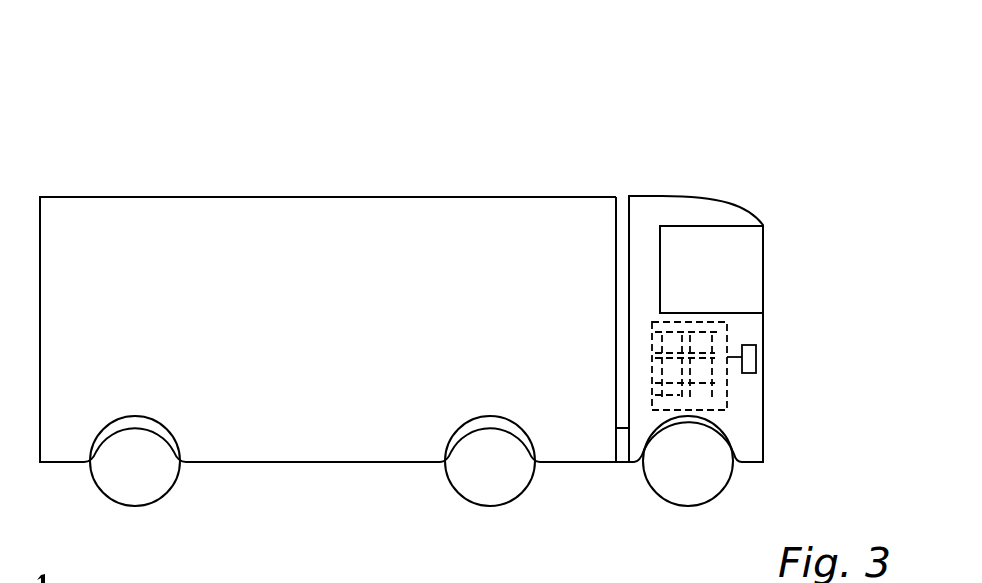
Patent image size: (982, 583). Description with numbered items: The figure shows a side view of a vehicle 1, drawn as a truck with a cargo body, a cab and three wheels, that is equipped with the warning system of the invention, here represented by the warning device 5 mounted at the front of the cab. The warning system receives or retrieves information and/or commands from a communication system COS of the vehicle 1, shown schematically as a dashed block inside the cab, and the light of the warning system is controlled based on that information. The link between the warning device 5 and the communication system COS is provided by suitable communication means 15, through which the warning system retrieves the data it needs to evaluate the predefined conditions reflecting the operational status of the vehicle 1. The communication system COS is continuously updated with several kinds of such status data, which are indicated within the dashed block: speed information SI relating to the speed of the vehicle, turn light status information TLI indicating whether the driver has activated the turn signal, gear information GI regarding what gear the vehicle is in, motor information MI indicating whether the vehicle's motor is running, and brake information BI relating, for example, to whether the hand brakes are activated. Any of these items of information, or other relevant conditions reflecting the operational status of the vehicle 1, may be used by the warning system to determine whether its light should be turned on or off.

The vehicle 1 is at (160, 178).
The warning device 5 is at (756, 357).
The communication means 15 is at (742, 357).
The communication system COS is at (727, 385).
The gear information GI is at (670, 342).
The speed information SI is at (663, 373).
The turn light status information TLI is at (700, 342).
The motor information MI is at (688, 383).
The brake information BI is at (667, 396).